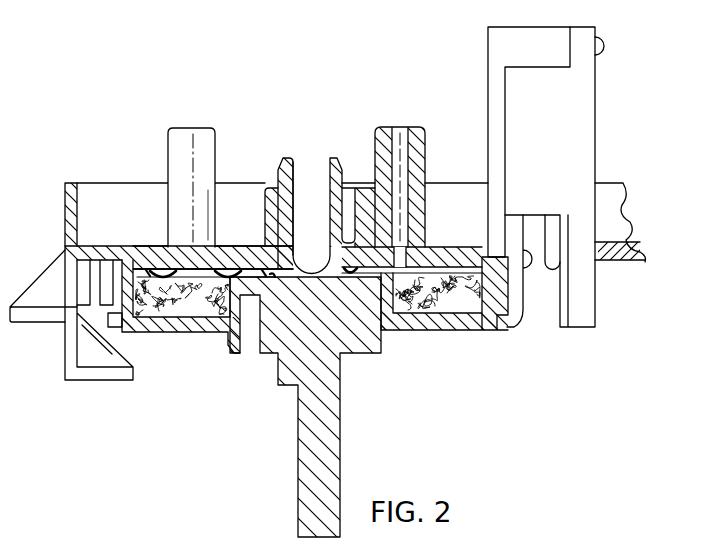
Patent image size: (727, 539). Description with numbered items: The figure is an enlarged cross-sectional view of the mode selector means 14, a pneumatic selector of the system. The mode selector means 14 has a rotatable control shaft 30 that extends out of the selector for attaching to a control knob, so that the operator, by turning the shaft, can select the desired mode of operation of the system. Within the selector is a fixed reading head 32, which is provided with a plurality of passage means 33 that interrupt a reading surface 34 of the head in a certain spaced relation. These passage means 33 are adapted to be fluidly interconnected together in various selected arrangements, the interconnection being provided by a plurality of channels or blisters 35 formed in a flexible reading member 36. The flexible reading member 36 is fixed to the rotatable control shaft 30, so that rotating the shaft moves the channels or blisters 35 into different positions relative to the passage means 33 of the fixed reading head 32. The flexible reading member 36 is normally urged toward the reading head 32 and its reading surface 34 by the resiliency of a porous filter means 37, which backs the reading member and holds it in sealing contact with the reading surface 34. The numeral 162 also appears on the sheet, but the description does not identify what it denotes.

The mode selector means 14 is at (541, 346).
The rotatable control shaft 30 is at (298, 428).
The fixed reading head 32 is at (254, 247).
The passage means 33 is at (427, 255).
The reading surface 34 is at (440, 275).
The channels or blisters 35 is at (173, 270).
The flexible reading member 36 is at (222, 262).
The porous filter means 37 is at (428, 331).
The terminal 162 is at (55, 537).